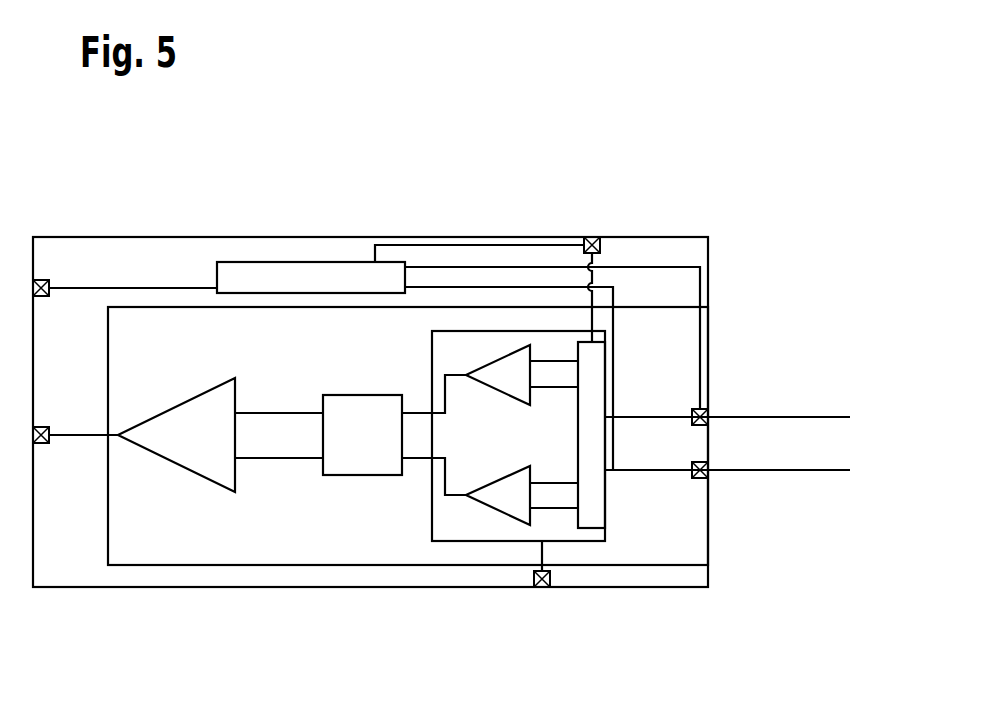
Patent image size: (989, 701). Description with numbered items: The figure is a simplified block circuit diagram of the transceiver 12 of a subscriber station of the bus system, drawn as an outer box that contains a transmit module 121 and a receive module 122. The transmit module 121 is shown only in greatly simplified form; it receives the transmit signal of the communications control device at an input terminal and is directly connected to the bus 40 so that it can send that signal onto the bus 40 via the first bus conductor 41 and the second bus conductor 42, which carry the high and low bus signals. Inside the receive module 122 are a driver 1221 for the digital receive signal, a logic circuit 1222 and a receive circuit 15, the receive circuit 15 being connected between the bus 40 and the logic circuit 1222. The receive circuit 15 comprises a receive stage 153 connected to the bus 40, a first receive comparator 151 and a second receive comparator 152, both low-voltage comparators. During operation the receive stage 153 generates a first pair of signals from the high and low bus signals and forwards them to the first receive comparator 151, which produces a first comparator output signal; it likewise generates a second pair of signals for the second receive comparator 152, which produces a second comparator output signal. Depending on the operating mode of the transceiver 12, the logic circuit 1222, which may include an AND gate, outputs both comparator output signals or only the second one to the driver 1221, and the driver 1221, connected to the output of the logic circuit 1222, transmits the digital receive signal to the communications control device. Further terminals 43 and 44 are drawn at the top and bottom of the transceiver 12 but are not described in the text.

The transceiver 12 is at (175, 237).
The transmit module 121 is at (288, 262).
The receive module 122 is at (287, 565).
The driver 1221 is at (165, 460).
The logic circuit 1222 is at (360, 476).
The receive circuit 15 is at (447, 541).
The first receive comparator 151 is at (490, 353).
The second receive comparator 152 is at (495, 508).
The receive stage 153 is at (595, 529).
The control terminal 43 is at (591, 237).
The control terminal 44 is at (545, 588).
The first bus conductor 41 is at (738, 415).
The second bus conductor 42 is at (738, 472).
The bus 40 is at (768, 372).